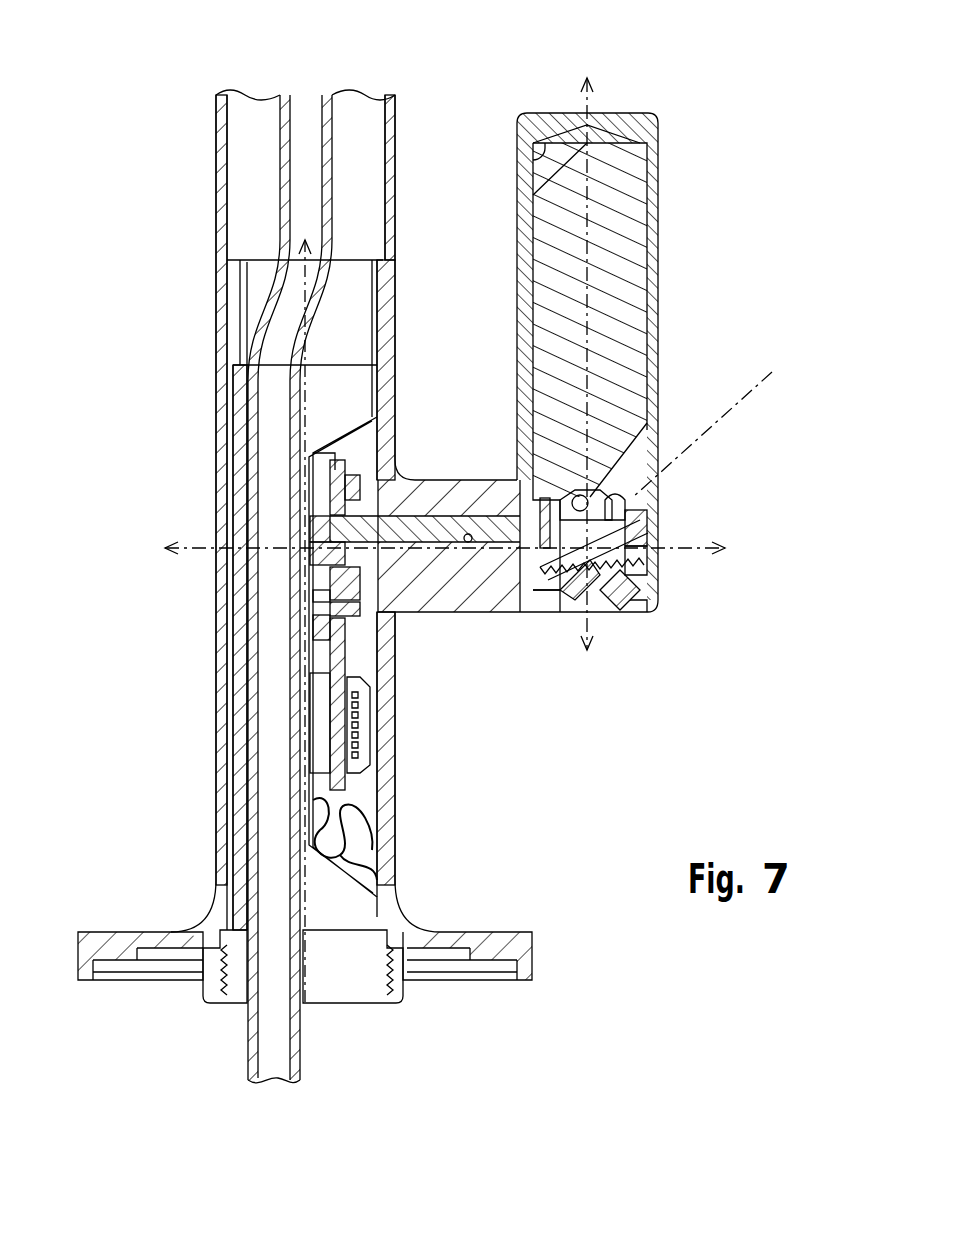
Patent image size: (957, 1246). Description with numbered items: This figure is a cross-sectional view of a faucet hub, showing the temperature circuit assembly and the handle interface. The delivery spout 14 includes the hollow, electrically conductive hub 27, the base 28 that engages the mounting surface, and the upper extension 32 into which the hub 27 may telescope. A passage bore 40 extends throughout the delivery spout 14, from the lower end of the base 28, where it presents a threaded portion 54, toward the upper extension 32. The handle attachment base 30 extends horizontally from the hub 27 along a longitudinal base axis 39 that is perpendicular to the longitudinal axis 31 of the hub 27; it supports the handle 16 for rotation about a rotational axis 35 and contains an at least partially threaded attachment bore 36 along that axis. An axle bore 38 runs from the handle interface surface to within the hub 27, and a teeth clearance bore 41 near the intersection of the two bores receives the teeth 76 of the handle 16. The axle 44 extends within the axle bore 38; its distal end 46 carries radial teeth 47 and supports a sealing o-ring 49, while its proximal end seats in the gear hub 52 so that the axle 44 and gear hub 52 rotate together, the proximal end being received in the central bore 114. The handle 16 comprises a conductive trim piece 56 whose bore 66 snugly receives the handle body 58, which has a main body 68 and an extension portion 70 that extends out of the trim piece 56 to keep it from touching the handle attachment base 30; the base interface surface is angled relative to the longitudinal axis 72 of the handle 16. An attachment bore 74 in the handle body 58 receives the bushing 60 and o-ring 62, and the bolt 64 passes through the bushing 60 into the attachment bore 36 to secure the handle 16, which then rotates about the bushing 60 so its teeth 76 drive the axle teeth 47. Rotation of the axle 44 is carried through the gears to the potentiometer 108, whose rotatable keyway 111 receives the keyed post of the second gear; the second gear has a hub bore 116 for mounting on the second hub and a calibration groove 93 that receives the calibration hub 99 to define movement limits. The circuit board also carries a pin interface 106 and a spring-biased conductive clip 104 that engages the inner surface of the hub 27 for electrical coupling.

The delivery spout 14 is at (216, 180).
The handle 16 is at (719, 134).
The hub 27 is at (222, 773).
The base 28 is at (510, 932).
The handle attachment base 30 is at (514, 690).
The longitudinal axis 31 is at (305, 968).
The upper extension 32 is at (395, 117).
The rotational axis 35 is at (776, 360).
The attachment bore 36 is at (562, 612).
The axle bore 38 is at (468, 540).
The longitudinal base axis 39 is at (695, 530).
The passage bore 40 is at (227, 140).
The teeth clearance bore 41 is at (612, 592).
The axle 44 is at (437, 517).
The distal end 46 is at (580, 500).
The teeth 47 is at (640, 510).
The sealing o-ring 49 is at (518, 600).
The gear hub 52 is at (383, 478).
The threaded portion 54 is at (238, 985).
The trim piece 56 is at (655, 205).
The handle body 58 is at (621, 283).
The bushing 60 is at (650, 545).
The o-ring 62 is at (655, 560).
The bolt 64 is at (648, 522).
The bore 66 is at (548, 152).
The main body 68 is at (640, 332).
The extension portion 70 is at (548, 494).
The longitudinal axis 72 is at (608, 92).
The attachment bore 74 is at (640, 480).
The teeth 76 is at (652, 592).
The calibration groove 93 is at (300, 632).
The calibration hub 99 is at (345, 670).
The clip 104 is at (370, 830).
The pin interface 106 is at (360, 745).
The potentiometer 108 is at (340, 638).
The rotatable keyway 111 is at (345, 585).
The central bore 114 is at (313, 538).
The hub bore 116 is at (300, 598).